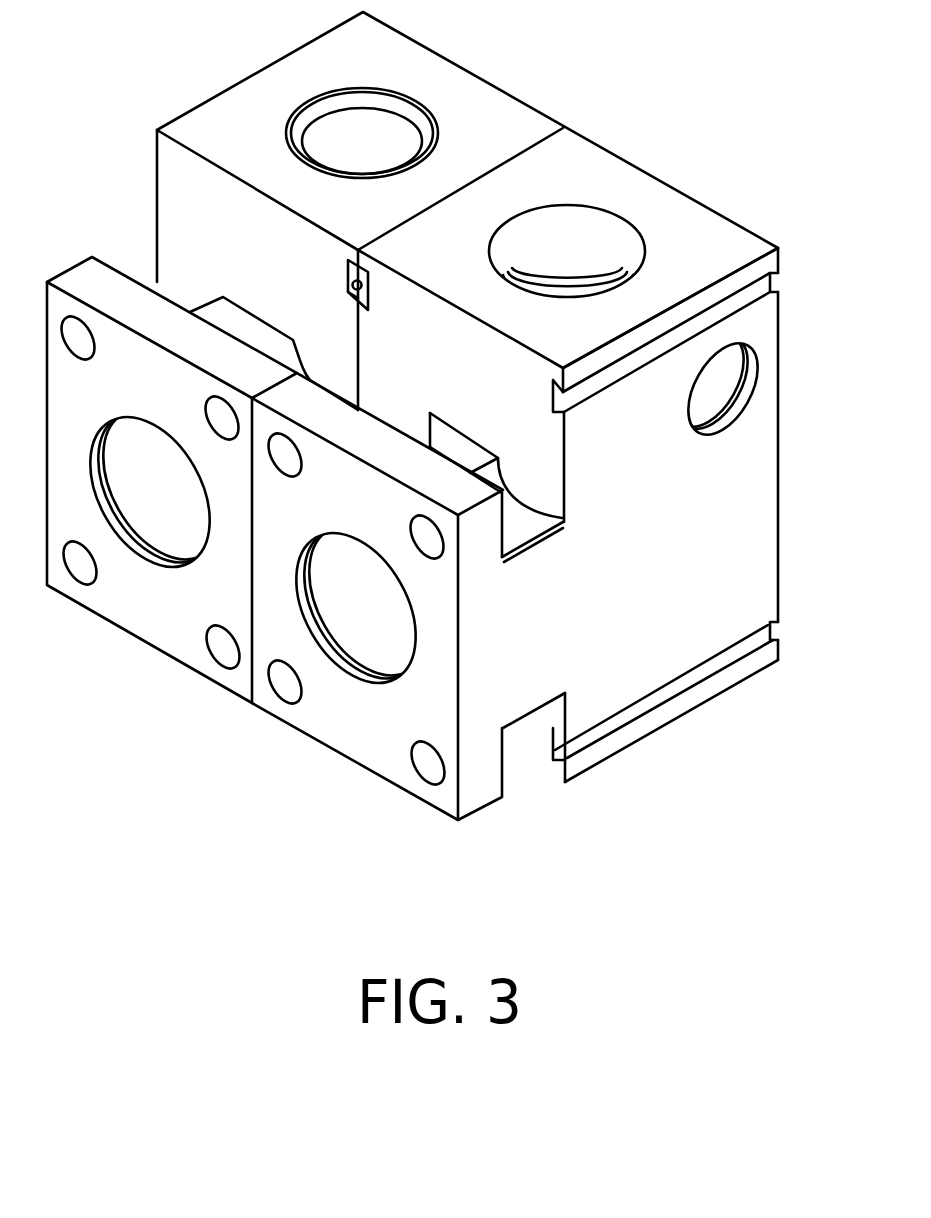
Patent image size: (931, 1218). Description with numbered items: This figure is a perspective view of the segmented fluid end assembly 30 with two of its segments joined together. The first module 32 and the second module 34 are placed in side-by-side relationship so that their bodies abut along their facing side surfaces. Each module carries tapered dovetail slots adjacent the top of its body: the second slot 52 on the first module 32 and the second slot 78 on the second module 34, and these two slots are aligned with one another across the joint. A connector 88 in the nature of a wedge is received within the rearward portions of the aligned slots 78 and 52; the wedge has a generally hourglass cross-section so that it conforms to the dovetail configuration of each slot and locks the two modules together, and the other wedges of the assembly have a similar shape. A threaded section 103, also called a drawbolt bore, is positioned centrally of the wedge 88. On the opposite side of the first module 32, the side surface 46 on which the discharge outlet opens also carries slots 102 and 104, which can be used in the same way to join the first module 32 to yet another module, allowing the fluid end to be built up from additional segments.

The segmented fluid end assembly 30 is at (681, 100).
The first module 32 is at (677, 200).
The second module 34 is at (433, 66).
The side surface 46 is at (778, 482).
The second slot 52 is at (372, 272).
The second slot 78 is at (347, 277).
The connector 88 is at (367, 290).
The slot 102 is at (778, 282).
The threaded section 103 is at (354, 297).
The slot 104 is at (778, 622).